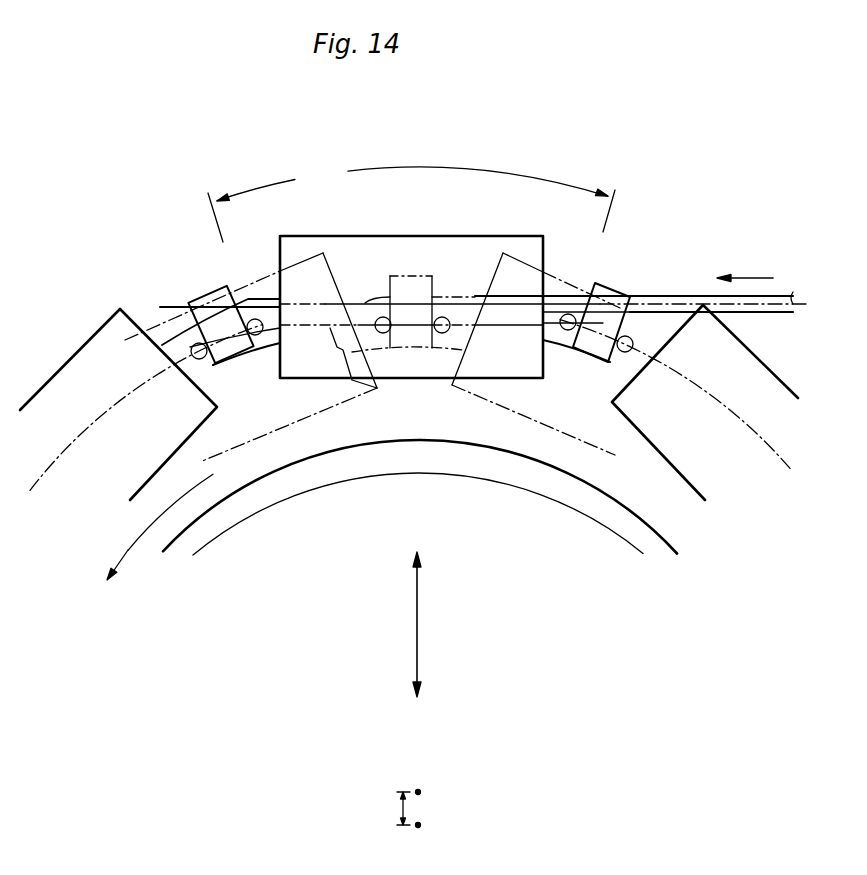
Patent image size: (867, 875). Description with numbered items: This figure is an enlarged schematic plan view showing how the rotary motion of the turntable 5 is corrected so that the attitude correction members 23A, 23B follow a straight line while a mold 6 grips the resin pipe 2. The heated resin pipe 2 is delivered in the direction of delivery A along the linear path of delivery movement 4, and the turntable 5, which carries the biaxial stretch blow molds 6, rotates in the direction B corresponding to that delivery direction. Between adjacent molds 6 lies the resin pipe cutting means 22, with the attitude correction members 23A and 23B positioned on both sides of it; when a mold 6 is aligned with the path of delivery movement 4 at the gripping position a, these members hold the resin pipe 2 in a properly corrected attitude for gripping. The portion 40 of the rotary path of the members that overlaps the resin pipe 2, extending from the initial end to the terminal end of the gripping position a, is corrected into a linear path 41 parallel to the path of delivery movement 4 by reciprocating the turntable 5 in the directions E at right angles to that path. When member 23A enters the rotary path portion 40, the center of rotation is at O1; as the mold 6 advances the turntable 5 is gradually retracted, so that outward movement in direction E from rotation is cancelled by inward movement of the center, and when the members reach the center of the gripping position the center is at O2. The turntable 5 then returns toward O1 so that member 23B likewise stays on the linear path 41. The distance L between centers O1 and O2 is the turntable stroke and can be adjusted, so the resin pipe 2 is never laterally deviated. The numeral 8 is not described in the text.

The resin pipe workpiece 2 is at (771, 314).
The path of delivery movement 4 is at (798, 302).
The turntable 5 is at (184, 528).
The biaxial stretch blow mold 6 is at (798, 398).
The pole piece 8 is at (93, 342).
The resin pipe cutting means 22 is at (200, 300).
The attitude correction member 23A is at (197, 343).
The attitude correction member 23B is at (257, 335).
The rotary path portion 40 is at (411, 204).
The linear path 41 is at (362, 390).
The direction of delivery A is at (746, 278).
The direction of rotation B is at (124, 563).
The reciprocating directions E is at (420, 627).
The distance between centers L is at (400, 810).
The center of rotation O1 is at (423, 792).
The center of rotation O2 is at (423, 825).
The gripping position a is at (407, 142).